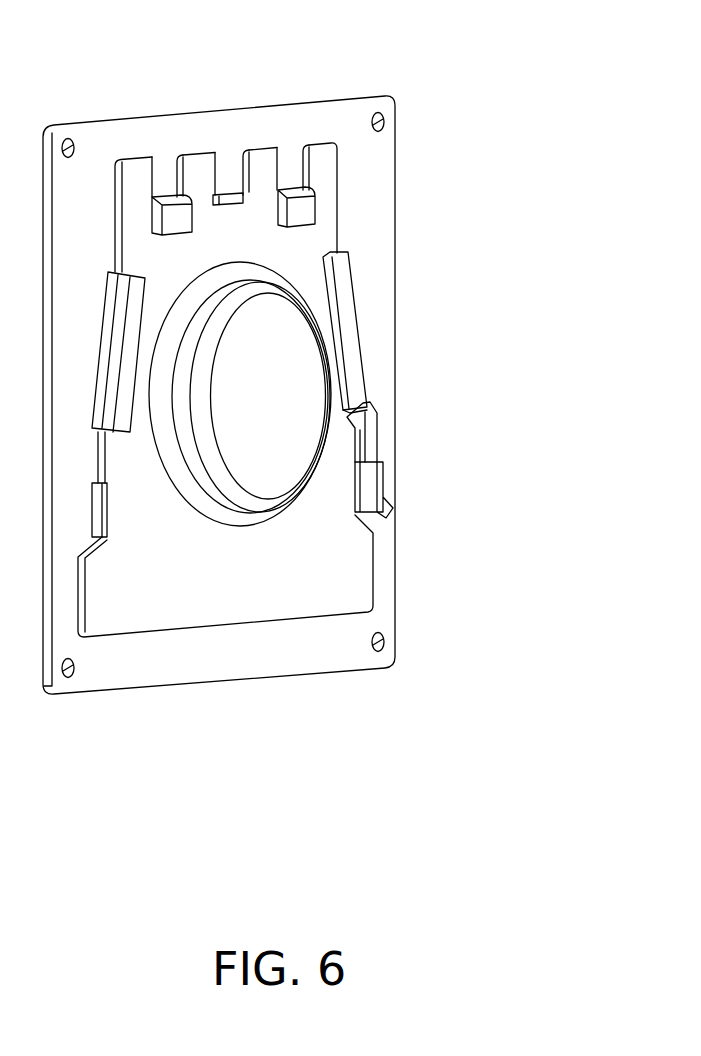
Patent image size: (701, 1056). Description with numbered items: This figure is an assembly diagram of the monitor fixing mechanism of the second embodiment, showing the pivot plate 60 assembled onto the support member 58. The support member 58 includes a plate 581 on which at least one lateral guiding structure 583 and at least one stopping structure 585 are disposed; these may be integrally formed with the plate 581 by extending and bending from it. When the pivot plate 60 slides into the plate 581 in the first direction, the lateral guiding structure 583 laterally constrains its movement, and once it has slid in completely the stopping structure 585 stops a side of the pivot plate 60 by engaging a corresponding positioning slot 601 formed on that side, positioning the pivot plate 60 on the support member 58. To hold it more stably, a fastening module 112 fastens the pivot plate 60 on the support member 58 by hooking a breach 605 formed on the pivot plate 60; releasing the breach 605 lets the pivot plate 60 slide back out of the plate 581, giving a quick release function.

The support member 58 is at (356, 354).
The pivot plate 60 is at (382, 590).
The positioning slot 601 is at (170, 148).
The breach 605 is at (348, 432).
The plate 581 is at (384, 376).
The lateral guiding structure 583 is at (340, 313).
The stopping structure 585 is at (357, 274).
The fastening module 112 is at (368, 441).